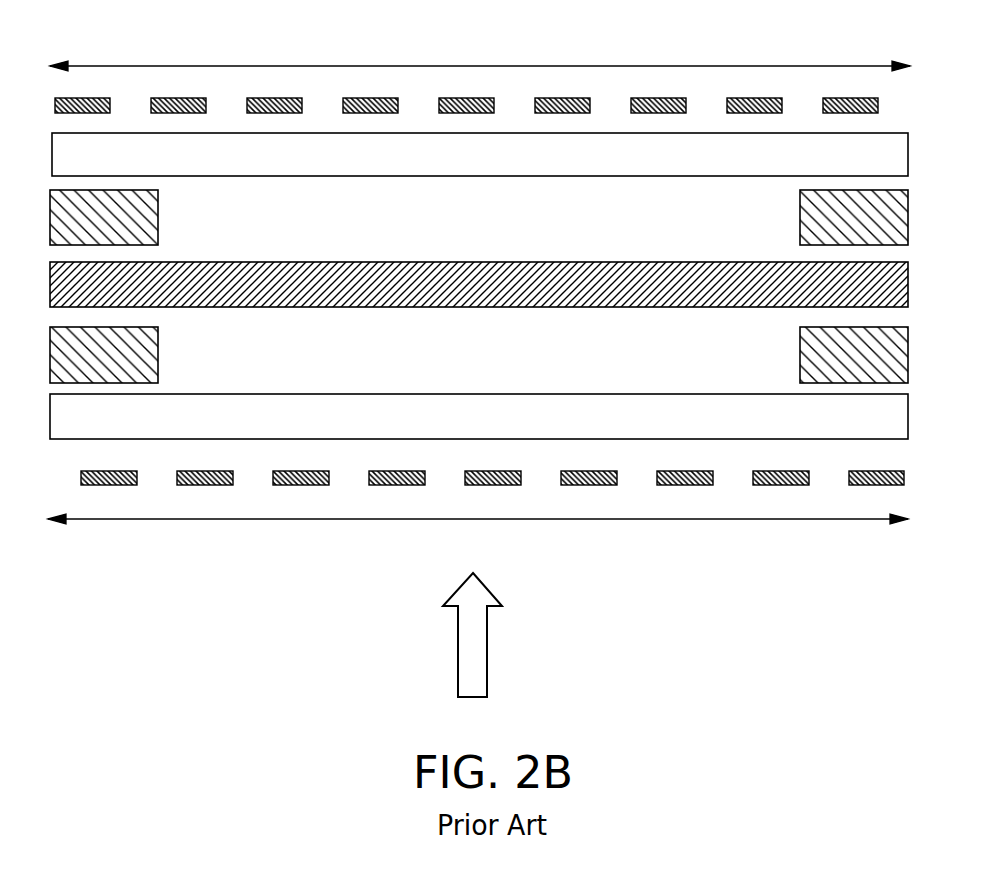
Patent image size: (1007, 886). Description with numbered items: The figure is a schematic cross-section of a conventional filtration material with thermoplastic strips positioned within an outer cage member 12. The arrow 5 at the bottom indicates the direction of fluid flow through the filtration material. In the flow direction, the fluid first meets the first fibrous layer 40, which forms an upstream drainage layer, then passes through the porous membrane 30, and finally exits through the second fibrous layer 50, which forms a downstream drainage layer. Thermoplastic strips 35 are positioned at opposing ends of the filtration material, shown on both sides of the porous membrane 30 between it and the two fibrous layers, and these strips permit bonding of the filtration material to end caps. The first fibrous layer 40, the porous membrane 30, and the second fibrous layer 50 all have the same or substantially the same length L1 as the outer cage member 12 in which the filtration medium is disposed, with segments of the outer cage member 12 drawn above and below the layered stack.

The arrow 5 is at (487, 656).
The outer cage member 12 is at (878, 104).
The porous membrane 30 is at (908, 288).
The thermoplastic strips 35 is at (908, 232).
The first fibrous layer 40 is at (908, 420).
The second fibrous layer 50 is at (908, 155).
The length L1 is at (291, 66).